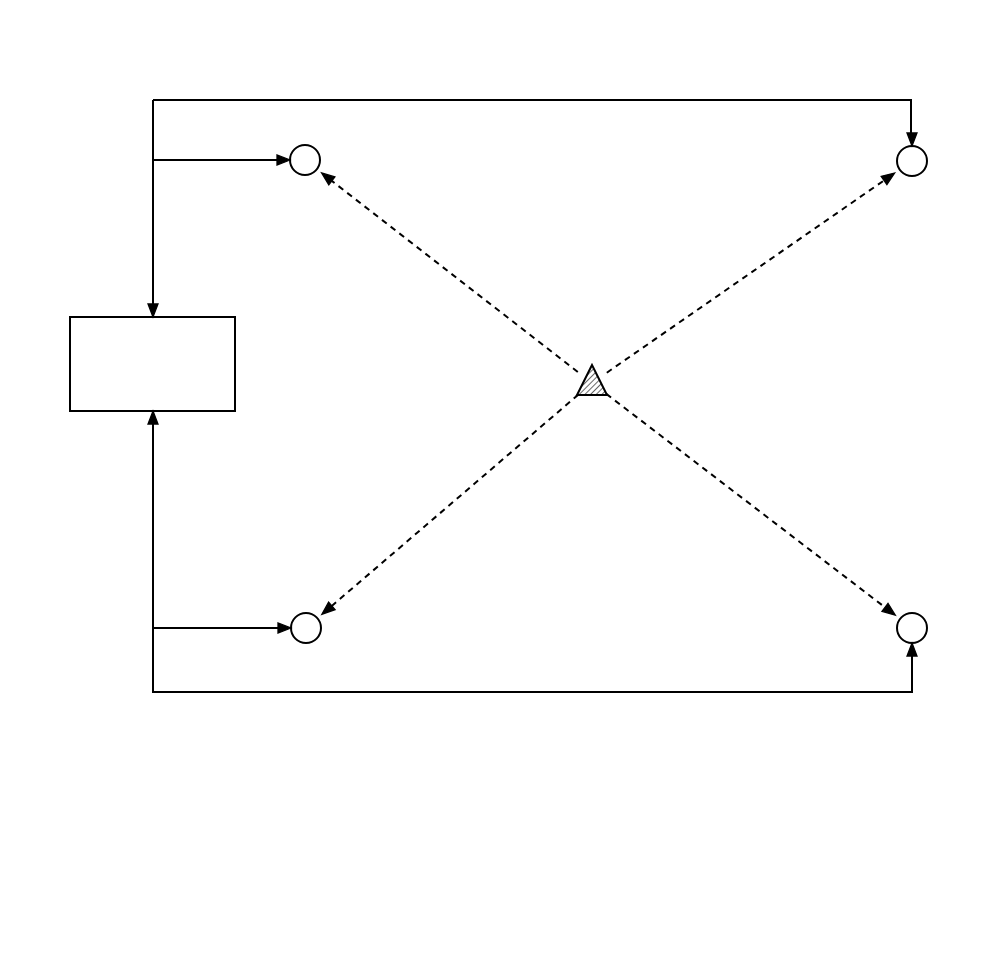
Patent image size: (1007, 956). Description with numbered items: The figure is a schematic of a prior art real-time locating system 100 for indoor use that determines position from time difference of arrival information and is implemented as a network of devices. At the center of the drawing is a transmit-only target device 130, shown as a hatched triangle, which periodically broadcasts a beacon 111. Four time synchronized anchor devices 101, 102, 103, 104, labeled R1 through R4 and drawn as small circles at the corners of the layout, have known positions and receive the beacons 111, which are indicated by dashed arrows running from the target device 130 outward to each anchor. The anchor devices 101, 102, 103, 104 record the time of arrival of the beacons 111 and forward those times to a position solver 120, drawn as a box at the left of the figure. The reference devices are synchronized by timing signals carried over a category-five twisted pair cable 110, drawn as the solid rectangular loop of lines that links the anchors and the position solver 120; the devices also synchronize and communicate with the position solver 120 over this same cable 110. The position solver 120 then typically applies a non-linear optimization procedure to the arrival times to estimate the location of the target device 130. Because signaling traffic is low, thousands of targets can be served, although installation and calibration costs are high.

The prior art positioning system 100 is at (577, 753).
The category-5 twisted pair cable 110 is at (592, 99).
The position solver 120 is at (117, 413).
The anchor device 101 is at (296, 642).
The anchor device 102 is at (317, 160).
The anchor device 103 is at (927, 157).
The anchor device 104 is at (925, 618).
The beacon 111 is at (488, 305).
The target device 130 is at (595, 368).